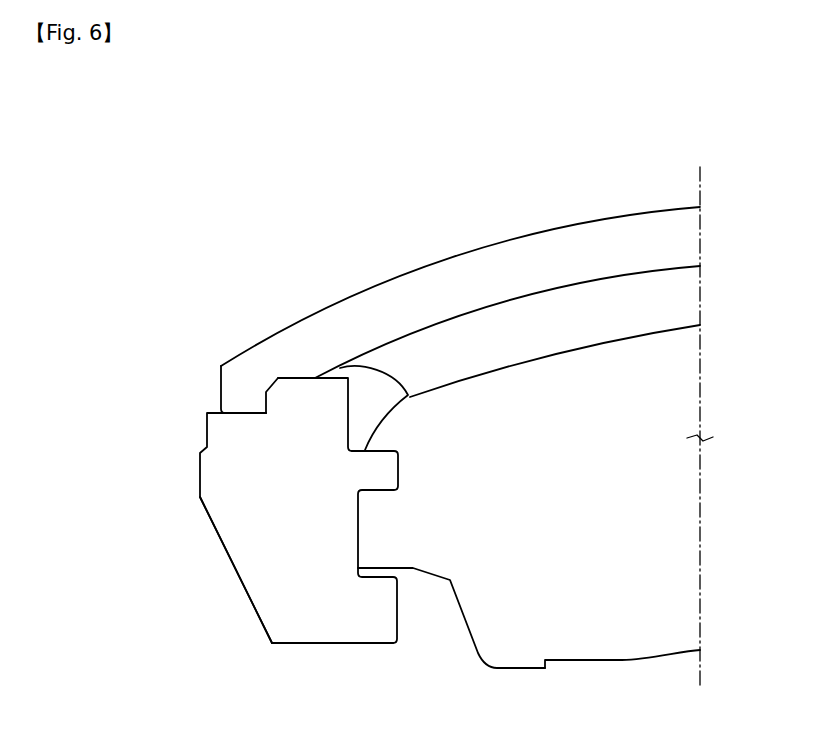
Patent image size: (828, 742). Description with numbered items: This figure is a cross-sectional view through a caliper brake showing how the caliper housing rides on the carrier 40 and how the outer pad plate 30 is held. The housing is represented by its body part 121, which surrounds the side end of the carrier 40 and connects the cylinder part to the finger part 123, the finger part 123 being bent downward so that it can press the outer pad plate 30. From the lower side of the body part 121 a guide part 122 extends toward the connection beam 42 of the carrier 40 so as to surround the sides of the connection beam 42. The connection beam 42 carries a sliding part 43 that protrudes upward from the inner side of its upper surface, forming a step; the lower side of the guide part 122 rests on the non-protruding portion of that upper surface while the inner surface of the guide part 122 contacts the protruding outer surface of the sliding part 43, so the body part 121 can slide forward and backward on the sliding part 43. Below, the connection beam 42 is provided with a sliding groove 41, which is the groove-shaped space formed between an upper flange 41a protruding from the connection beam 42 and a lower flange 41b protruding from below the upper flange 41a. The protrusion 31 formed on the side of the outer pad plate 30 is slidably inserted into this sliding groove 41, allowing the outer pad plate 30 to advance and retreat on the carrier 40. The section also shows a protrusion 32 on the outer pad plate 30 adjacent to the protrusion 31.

The outer pad plate 30 is at (591, 622).
The protrusion 31 is at (378, 530).
The sealing protrusion 32 is at (387, 430).
The carrier 40 is at (206, 527).
The sliding groove 41 is at (153, 581).
The upper flange 41a is at (367, 470).
The lower flange 41b is at (380, 617).
The connection beam 42 is at (304, 425).
The sliding part 43 is at (270, 405).
The body part 121 is at (490, 270).
The guide part 122 is at (232, 390).
The finger part 123 is at (553, 327).